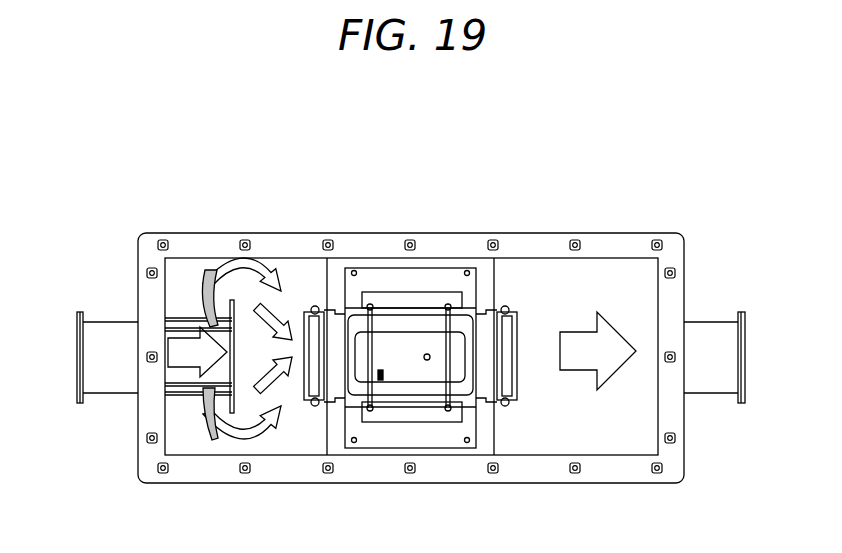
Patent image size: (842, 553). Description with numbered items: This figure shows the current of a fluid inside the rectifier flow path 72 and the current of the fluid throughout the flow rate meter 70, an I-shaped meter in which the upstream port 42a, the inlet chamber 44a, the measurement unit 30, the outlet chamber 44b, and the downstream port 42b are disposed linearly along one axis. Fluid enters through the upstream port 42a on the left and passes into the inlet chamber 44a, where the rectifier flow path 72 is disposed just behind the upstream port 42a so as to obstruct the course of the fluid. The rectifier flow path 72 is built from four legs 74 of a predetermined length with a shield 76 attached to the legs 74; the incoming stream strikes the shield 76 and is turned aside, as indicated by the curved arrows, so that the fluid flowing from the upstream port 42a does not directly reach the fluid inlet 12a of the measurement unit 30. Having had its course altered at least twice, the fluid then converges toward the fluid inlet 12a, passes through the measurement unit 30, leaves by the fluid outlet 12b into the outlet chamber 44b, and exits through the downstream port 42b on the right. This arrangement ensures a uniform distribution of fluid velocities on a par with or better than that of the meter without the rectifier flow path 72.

The flow rate meter 70 is at (679, 211).
The shield 76 is at (209, 318).
The rectifier flow path 72 is at (220, 406).
The legs 74 is at (183, 318).
The upstream port 42a is at (74, 395).
The downstream port 42b is at (746, 377).
The inlet chamber 44a is at (177, 415).
The outlet chamber 44b is at (613, 422).
The fluid inlet 12a is at (297, 389).
The fluid outlet 12b is at (519, 386).
The measurement unit 30 is at (393, 409).